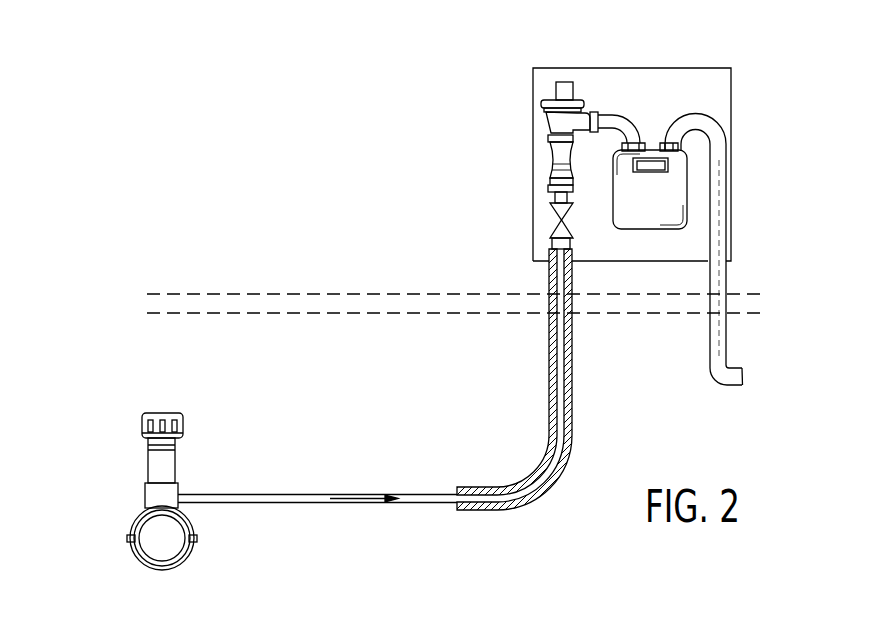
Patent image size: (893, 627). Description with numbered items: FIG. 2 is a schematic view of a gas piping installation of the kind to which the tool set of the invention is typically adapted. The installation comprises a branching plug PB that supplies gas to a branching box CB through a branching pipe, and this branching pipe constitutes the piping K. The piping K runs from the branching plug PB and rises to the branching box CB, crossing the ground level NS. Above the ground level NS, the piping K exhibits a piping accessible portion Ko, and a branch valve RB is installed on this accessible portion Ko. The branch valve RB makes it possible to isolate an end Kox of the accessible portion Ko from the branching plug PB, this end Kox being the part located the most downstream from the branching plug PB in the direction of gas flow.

The branching box CB is at (732, 88).
The end of the accessible portion Kox is at (553, 101).
The piping accessible portion Ko is at (549, 160).
The branch valve RB is at (549, 221).
The ground level NS is at (215, 294).
The piping K is at (548, 403).
The branching plug PB is at (142, 493).